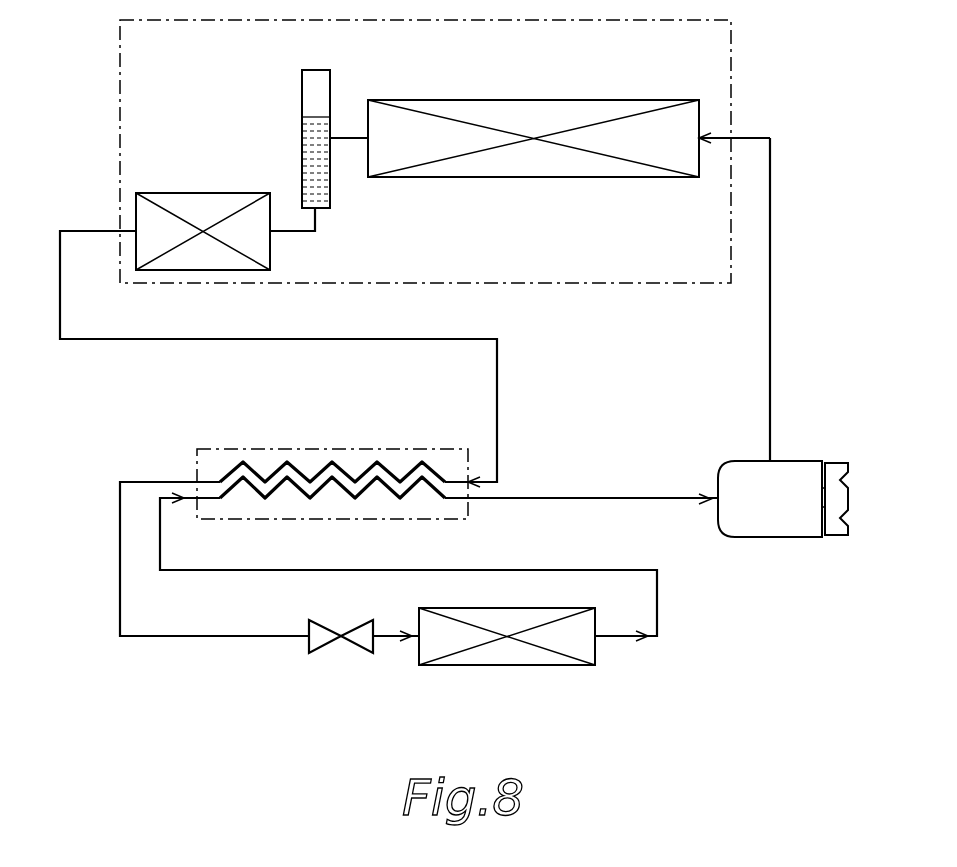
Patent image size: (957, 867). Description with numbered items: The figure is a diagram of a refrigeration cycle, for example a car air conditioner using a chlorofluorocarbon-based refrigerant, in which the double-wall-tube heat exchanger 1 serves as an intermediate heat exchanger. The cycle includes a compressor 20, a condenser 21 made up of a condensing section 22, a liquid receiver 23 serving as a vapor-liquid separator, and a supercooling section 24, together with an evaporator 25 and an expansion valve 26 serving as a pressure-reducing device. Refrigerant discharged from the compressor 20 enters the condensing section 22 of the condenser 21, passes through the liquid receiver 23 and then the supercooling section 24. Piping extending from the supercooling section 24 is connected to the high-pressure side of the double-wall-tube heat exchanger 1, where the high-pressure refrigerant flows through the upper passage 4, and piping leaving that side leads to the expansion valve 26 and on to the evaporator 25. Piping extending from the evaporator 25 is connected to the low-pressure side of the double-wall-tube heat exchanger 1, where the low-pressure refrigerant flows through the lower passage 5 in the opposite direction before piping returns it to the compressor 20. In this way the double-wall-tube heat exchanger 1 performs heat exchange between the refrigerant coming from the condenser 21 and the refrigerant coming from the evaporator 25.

The double-wall-tube heat exchanger 1 is at (200, 443).
The high-pressure refrigerant flow channel 4 is at (252, 470).
The low-pressure refrigerant flow channel 5 is at (405, 493).
The compressor 20 is at (777, 537).
The condenser 21 is at (731, 68).
The condensing section 22 is at (590, 116).
The liquid receiver 23 is at (330, 201).
The supercooling section 24 is at (182, 193).
The evaporator 25 is at (505, 665).
The expansion valve 26 is at (318, 650).